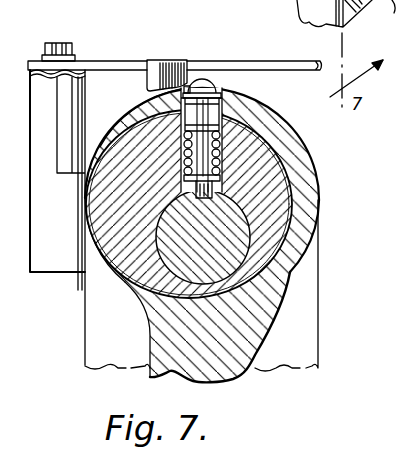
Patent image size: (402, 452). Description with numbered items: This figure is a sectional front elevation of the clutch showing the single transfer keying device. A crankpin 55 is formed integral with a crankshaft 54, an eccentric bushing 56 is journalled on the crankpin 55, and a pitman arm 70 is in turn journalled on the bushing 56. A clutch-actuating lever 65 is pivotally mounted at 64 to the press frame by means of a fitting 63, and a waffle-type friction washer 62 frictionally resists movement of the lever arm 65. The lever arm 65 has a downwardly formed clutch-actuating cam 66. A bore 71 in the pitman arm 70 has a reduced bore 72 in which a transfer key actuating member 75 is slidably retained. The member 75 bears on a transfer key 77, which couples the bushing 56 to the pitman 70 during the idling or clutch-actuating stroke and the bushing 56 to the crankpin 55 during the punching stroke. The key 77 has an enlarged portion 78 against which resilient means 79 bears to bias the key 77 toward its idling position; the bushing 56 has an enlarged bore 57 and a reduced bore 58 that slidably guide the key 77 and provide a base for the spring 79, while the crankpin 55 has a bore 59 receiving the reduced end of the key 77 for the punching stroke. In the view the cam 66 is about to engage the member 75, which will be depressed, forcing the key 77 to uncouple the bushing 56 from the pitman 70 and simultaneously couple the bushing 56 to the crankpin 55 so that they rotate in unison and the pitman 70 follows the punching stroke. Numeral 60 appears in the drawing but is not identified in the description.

The crankshaft 54 is at (392, 437).
The crankpin 55 is at (263, 256).
The eccentric bushing 56 is at (277, 237).
The enlarged bore 57 is at (225, 150).
The reduced bore 58 is at (198, 183).
The bore 59 is at (265, 212).
The cylinder body 60 is at (291, 293).
The waffle-type friction washer 62 is at (78, 70).
The fitting 63 is at (47, 278).
The pivot 64 is at (58, 43).
The clutch-actuating lever 65 is at (270, 68).
The clutch-actuating cam 66 is at (153, 62).
The pitman arm 70 is at (252, 335).
The bore 71 is at (148, 97).
The reduced bore 72 is at (193, 77).
The transfer key actuating member 75 is at (200, 80).
The transfer key 77 is at (214, 187).
The enlarged portion 78 is at (223, 130).
The resilient means 79 is at (224, 178).